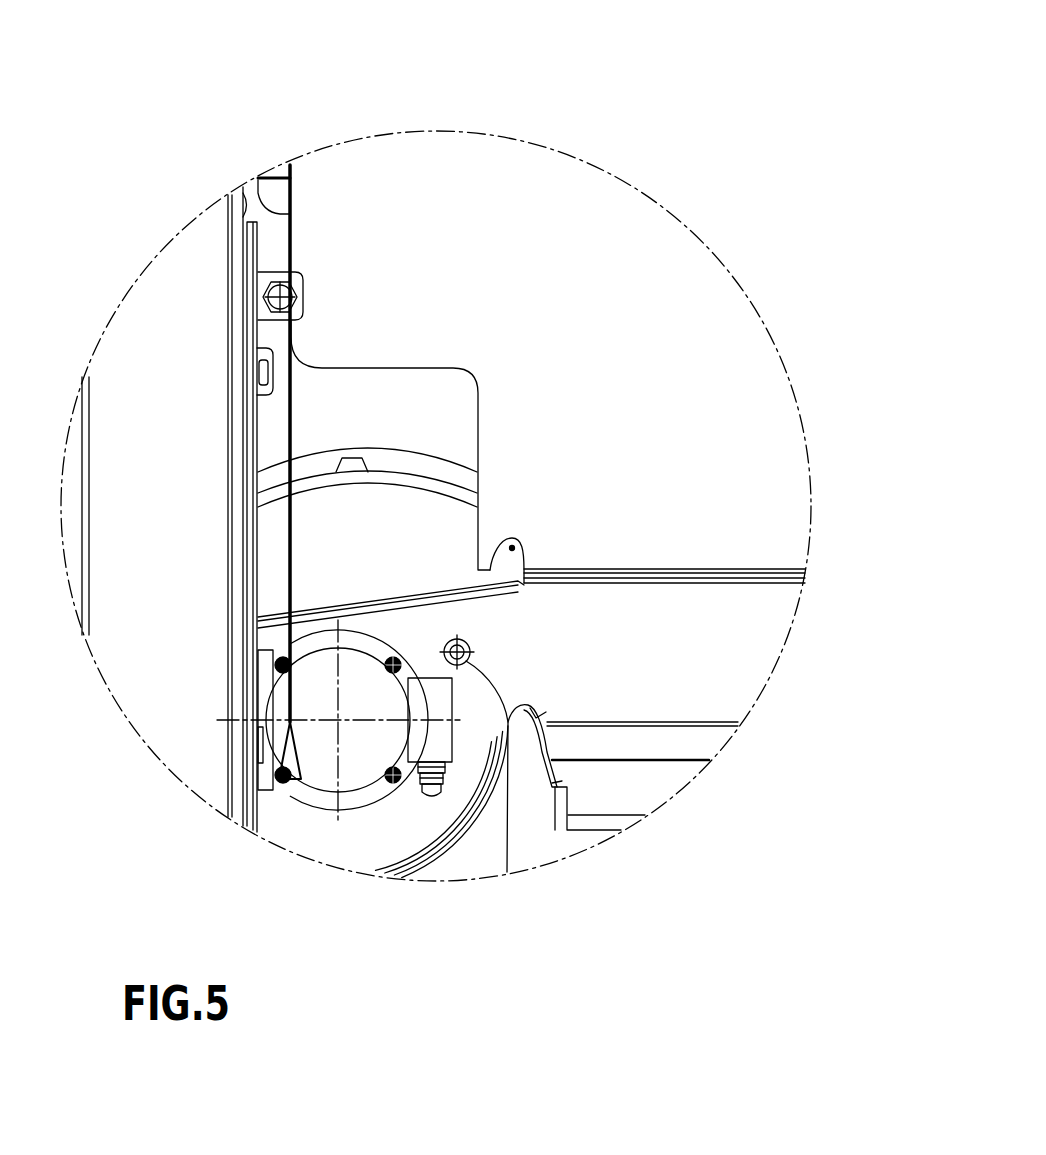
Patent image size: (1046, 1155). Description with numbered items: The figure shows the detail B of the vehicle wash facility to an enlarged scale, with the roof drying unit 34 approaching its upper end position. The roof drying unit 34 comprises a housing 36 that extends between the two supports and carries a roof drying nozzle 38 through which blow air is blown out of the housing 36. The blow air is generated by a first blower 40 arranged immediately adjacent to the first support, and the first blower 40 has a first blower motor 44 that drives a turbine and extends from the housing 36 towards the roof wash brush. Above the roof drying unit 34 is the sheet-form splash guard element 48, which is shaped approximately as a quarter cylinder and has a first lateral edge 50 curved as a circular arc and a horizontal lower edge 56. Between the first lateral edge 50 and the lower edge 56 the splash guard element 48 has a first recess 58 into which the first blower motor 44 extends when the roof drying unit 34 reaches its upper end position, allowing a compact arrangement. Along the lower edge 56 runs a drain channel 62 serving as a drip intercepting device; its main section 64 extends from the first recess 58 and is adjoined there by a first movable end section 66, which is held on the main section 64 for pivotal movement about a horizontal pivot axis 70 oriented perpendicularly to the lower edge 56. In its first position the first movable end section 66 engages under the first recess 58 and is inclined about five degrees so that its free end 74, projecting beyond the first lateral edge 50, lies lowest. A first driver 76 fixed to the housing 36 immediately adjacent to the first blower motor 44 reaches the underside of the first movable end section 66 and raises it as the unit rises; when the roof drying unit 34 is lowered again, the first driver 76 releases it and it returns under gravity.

The detail B is at (618, 177).
The roof drying unit 34 is at (731, 685).
The housing 36 is at (770, 648).
The roof drying nozzle 38 is at (580, 830).
The first blower 40 is at (373, 810).
The first blower motor 44 is at (353, 775).
The splash guard element 48 is at (676, 304).
The first lateral edge 50 is at (258, 178).
The lower edge 56 is at (466, 573).
The first recess 58 is at (372, 396).
The drain channel 62 is at (602, 592).
The main section 64 is at (770, 580).
The first movable end section 66 is at (387, 601).
The pivot axis 70 is at (520, 544).
The free end 74 is at (260, 598).
The first driver 76 is at (505, 830).